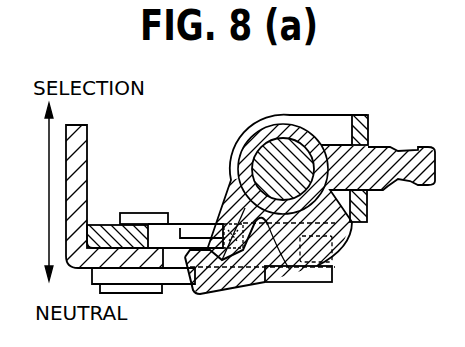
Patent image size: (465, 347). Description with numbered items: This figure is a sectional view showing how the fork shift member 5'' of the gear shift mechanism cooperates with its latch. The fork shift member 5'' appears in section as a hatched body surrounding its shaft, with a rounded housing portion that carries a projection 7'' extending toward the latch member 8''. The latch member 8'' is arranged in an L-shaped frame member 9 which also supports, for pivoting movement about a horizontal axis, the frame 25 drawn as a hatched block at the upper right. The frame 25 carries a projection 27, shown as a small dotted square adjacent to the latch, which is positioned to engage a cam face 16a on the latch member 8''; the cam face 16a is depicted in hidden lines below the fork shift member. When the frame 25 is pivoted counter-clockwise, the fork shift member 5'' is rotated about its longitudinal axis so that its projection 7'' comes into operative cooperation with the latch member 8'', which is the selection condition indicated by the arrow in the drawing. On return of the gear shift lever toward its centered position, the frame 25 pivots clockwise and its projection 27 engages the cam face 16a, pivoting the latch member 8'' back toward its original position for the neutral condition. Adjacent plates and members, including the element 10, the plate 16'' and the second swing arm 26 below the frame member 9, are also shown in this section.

The frame member 9 is at (89, 132).
The latch member 8'' is at (232, 173).
The slide member 10 is at (151, 212).
The projection 27 is at (218, 224).
The fork shift member 5'' is at (232, 173).
The frame 25 is at (364, 130).
The projection 7'' is at (260, 275).
The cam face 16a is at (246, 282).
The plate 16'' is at (300, 299).
The second swing arm 26 is at (147, 275).